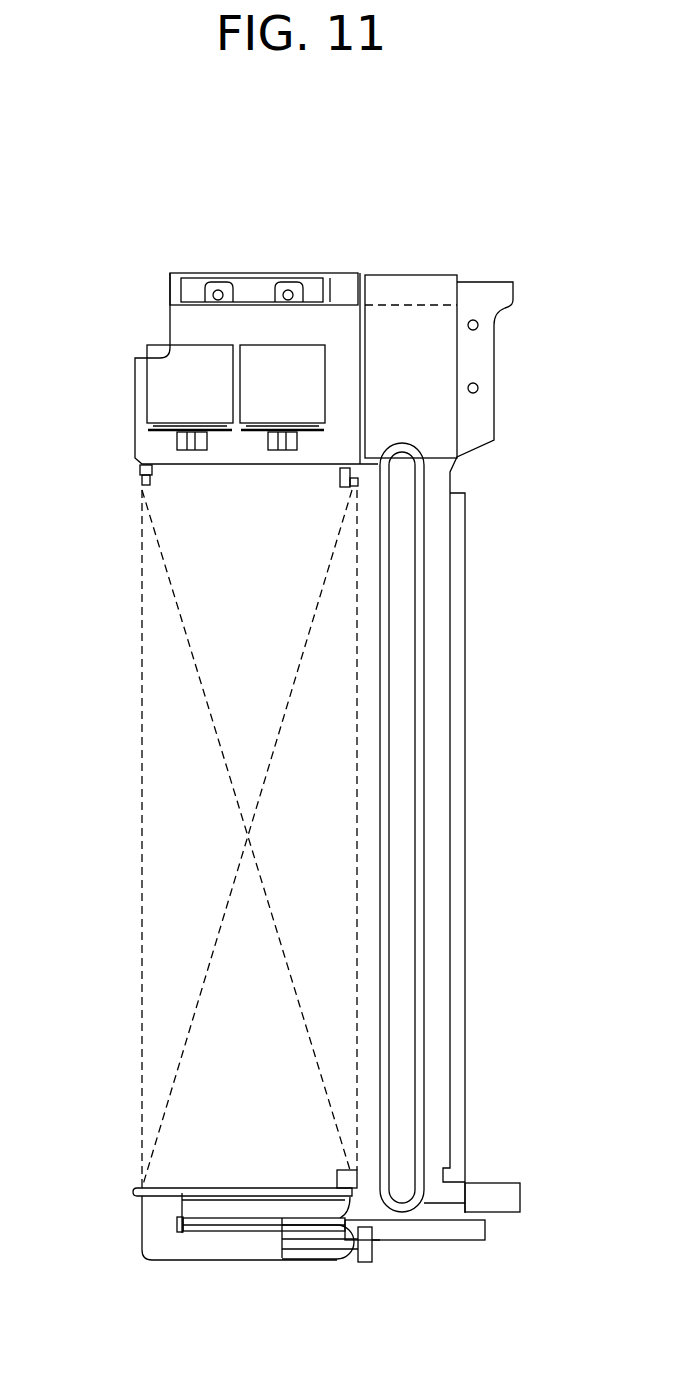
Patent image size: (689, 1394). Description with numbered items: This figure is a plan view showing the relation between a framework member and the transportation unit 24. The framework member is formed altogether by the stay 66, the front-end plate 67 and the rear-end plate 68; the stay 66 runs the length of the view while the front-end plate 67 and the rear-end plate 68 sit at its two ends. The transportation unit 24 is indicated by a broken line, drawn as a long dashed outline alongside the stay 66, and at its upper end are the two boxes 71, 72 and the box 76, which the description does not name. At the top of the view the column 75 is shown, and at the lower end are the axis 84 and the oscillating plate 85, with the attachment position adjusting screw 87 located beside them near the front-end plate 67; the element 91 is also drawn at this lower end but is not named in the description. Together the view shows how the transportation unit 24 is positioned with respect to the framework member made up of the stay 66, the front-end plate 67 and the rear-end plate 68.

The transportation unit 24 is at (167, 800).
The stay 66 is at (465, 762).
The front-end plate 67 is at (485, 1228).
The rear-end plate 68 is at (480, 285).
The first light source 71 is at (167, 398).
The second light source 72 is at (255, 388).
The column 75 is at (218, 290).
The support plate 76 is at (343, 273).
The axis 84 is at (177, 1225).
The oscillating plate 85 is at (147, 1250).
The attachment position adjusting screw 87 is at (372, 1256).
The slider 91 is at (282, 1250).